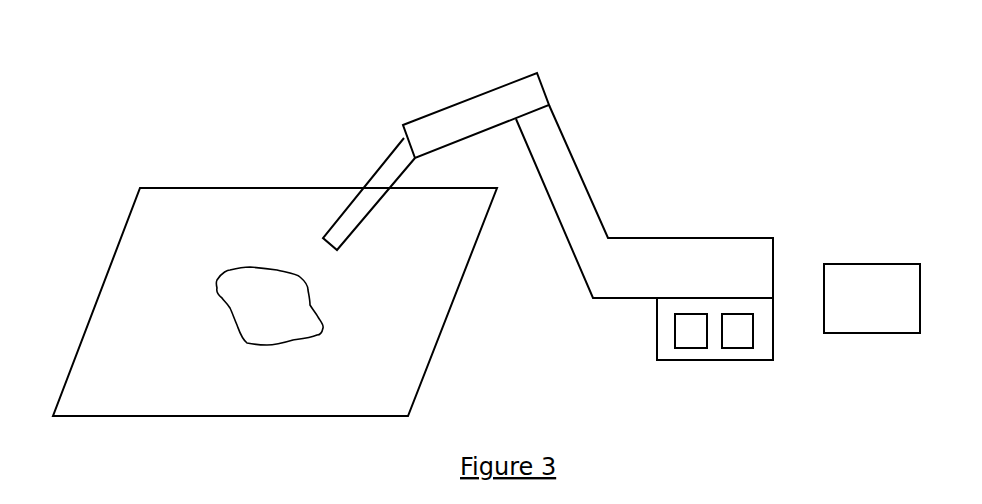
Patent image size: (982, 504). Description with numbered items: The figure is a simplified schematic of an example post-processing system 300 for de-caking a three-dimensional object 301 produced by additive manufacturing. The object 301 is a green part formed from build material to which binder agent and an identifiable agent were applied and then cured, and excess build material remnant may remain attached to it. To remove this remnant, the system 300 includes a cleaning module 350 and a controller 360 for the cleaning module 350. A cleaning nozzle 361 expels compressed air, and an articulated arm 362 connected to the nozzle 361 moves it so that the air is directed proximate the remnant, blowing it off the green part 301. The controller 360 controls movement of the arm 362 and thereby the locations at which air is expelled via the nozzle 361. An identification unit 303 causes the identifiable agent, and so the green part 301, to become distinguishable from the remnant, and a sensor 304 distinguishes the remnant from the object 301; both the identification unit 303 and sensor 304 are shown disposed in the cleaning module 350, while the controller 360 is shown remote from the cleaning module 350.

The system 300 is at (119, 148).
The 3D object 301 is at (279, 320).
The identification unit 303 is at (692, 338).
The sensor 304 is at (740, 333).
The cleaning module 350 is at (720, 255).
The controller 360 is at (872, 298).
The cleaning nozzle 361 is at (380, 178).
The articulated arm 362 is at (558, 158).